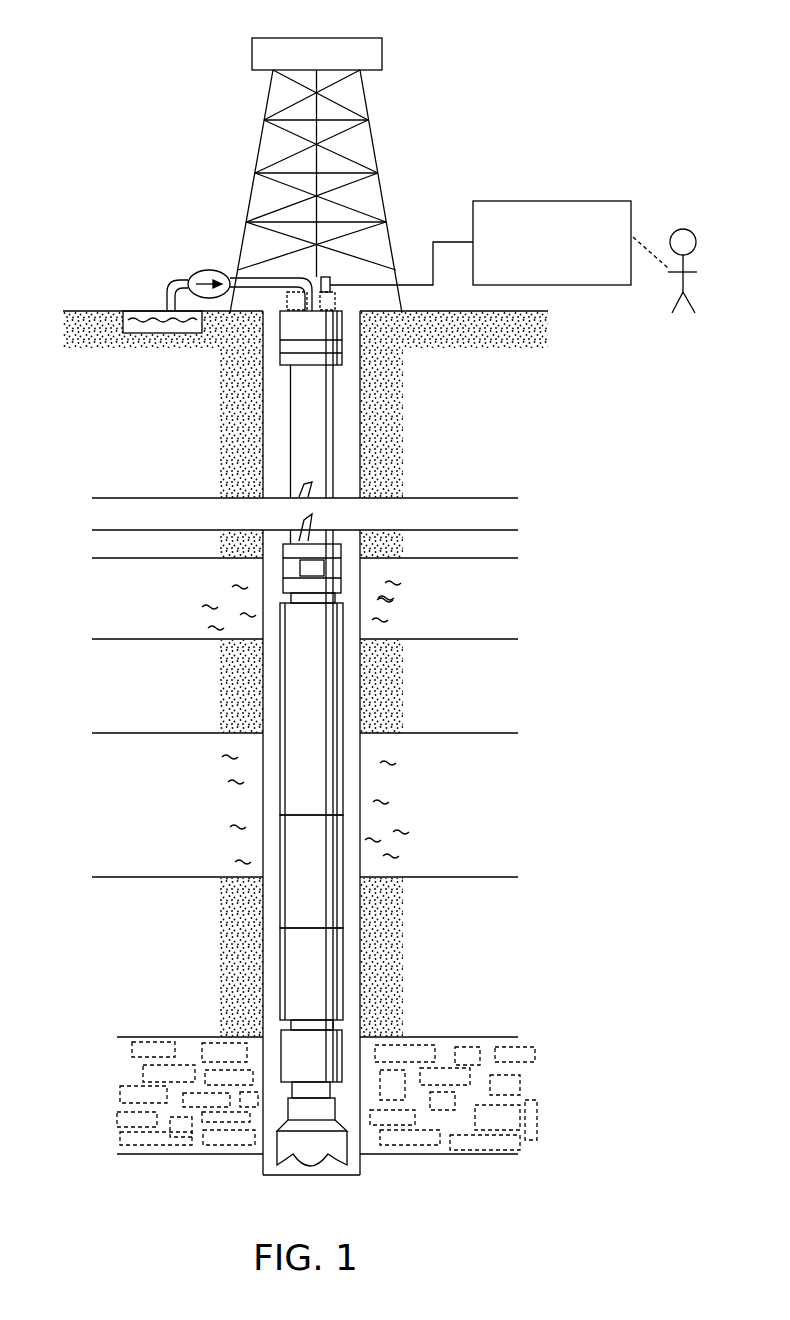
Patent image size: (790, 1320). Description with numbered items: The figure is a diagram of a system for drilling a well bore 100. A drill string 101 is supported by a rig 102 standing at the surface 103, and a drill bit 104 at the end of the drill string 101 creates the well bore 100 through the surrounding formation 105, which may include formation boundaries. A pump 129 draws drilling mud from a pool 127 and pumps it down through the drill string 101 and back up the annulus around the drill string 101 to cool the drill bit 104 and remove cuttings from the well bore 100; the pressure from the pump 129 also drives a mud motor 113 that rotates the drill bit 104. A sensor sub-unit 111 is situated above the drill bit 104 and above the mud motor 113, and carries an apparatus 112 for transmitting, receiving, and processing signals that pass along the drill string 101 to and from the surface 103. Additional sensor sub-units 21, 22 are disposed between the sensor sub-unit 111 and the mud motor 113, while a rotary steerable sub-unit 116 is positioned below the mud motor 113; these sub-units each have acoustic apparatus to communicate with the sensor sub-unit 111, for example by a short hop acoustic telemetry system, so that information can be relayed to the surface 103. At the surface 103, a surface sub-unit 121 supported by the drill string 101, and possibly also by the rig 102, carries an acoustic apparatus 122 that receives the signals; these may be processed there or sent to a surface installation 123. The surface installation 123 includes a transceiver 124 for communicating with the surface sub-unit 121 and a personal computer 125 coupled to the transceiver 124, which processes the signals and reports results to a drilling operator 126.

The rig 102 is at (394, 48).
The surface 103 is at (100, 311).
The pool 127 is at (153, 311).
The pump 129 is at (207, 270).
The surface sub-unit 121 is at (280, 313).
The transceiver 124 is at (325, 277).
The personal computer 125 is at (602, 285).
The surface installation 123 is at (550, 186).
The drilling operator 126 is at (680, 228).
The acoustic apparatus 122 is at (292, 347).
The well bore 100 is at (275, 432).
The drill string 101 is at (310, 469).
The formation 105 is at (482, 415).
The sensor sub-unit 111 is at (302, 553).
The apparatus 112 is at (315, 567).
The additional sensor sub-unit 21 is at (295, 702).
The additional sensor sub-unit 22 is at (295, 863).
The mud motor 113 is at (295, 999).
The rotary steerable sub-unit 116 is at (297, 1057).
The drill bit 104 is at (310, 1158).